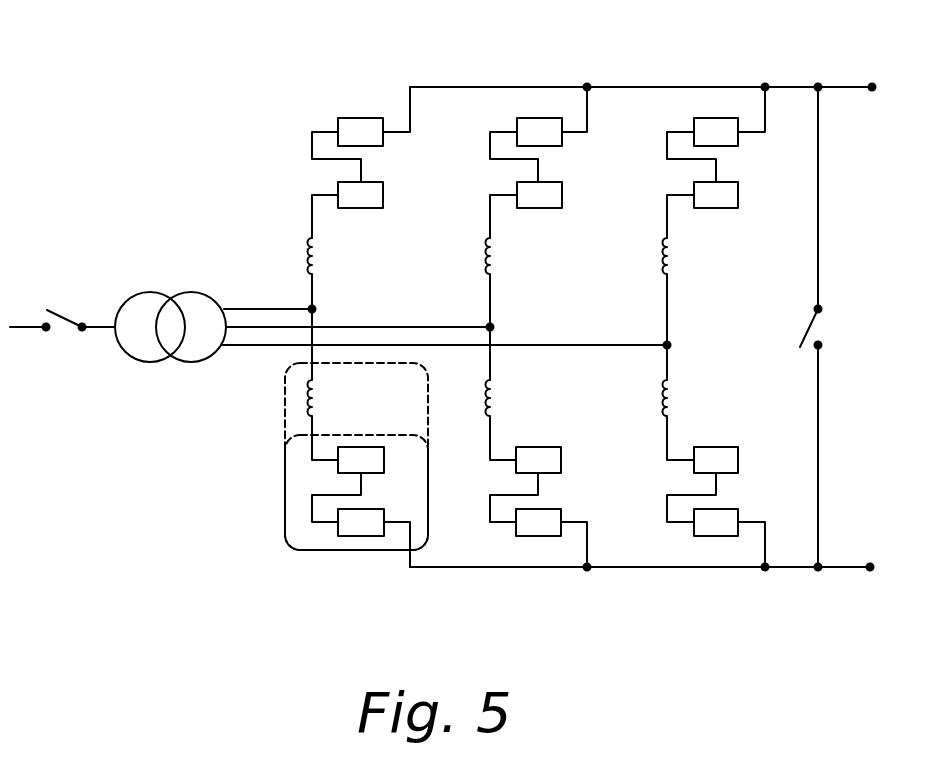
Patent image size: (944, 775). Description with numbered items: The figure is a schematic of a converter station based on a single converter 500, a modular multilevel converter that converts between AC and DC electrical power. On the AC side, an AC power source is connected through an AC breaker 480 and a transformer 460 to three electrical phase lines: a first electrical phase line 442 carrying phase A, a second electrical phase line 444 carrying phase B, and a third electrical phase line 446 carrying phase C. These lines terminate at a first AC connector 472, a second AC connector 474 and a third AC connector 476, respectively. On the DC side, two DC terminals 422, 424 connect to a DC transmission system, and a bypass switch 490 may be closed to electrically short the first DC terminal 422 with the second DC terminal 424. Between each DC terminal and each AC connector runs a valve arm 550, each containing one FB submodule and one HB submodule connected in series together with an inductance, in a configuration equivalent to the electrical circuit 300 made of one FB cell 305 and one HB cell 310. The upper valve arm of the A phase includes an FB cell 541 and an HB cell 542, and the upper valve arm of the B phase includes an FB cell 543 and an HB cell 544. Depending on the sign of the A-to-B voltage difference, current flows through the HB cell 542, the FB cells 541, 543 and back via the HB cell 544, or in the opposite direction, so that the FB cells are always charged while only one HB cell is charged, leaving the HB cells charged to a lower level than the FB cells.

The converter 500 is at (160, 80).
The FB cell 541 is at (338, 122).
The HB cell 542 is at (338, 185).
The FB cell 543 is at (517, 122).
The HB cell 544 is at (517, 185).
The DC terminal 424 is at (818, 87).
The DC terminal 422 is at (818, 567).
The bypass switch 490 is at (811, 330).
The transformer 460 is at (170, 300).
The first electrical phase line 442 is at (265, 309).
The third electrical phase line 446 is at (420, 328).
The second electrical phase line 444 is at (245, 345).
The first AC connector 472 is at (312, 309).
The second AC connector 474 is at (490, 327).
The third AC connector 476 is at (667, 345).
The AC breaker 480 is at (63, 322).
The valve arm 550 is at (262, 424).
The FB cell 305 is at (338, 470).
The HB cell 310 is at (338, 532).
The valve arm 300 is at (320, 550).